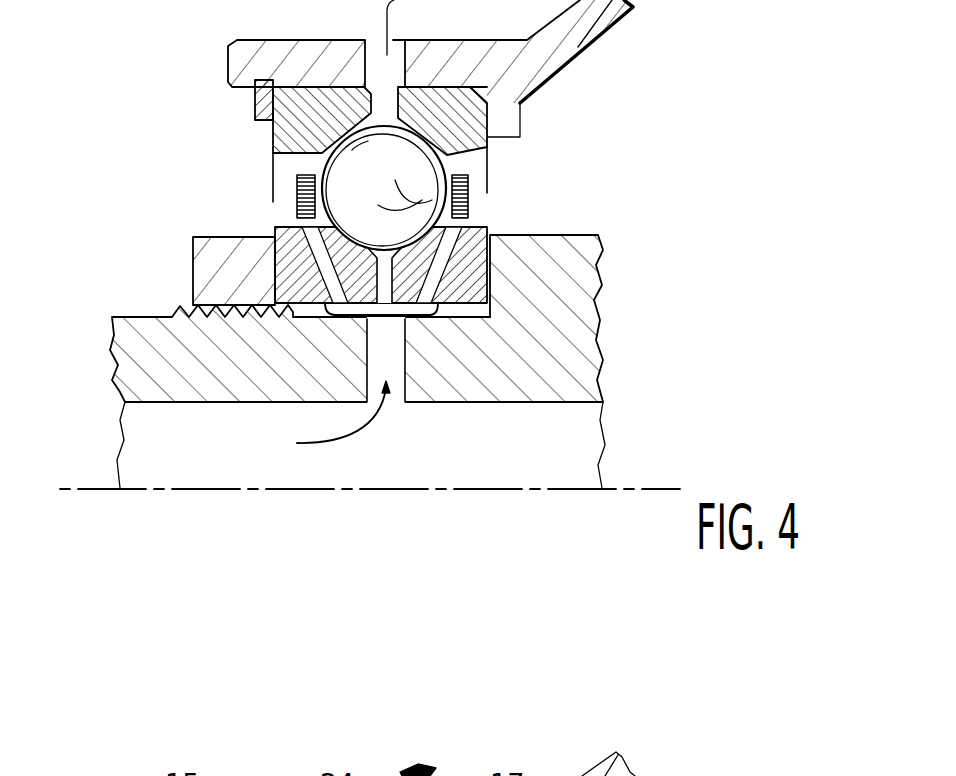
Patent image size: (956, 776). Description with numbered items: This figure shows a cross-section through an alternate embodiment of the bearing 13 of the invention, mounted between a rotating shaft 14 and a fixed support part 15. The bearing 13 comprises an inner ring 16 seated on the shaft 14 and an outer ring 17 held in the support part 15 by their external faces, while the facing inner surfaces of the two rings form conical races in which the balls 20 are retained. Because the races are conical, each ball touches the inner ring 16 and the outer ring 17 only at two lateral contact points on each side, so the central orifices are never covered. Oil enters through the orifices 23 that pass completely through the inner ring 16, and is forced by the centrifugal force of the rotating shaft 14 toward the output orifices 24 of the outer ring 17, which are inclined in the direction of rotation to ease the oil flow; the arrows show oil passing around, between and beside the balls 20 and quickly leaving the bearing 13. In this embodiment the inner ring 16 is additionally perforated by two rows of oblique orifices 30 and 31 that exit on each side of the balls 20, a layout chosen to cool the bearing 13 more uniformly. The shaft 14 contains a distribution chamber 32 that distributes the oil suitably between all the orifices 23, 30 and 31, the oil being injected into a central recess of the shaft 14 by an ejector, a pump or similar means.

The bearing 13 is at (249, 171).
The shaft 14 is at (133, 333).
The support part 15 is at (252, 56).
The inner ring 16 is at (497, 270).
The outer ring 17 is at (495, 147).
The balls 20 is at (468, 186).
The orifices 23 is at (385, 300).
The orifices 24 is at (396, 105).
The oblique orifices 30 is at (313, 250).
The oblique orifices 31 is at (452, 243).
The distribution chamber 32 is at (347, 312).